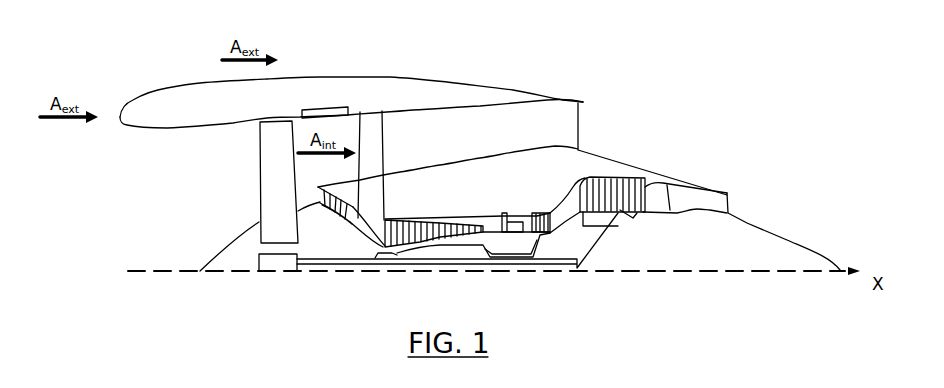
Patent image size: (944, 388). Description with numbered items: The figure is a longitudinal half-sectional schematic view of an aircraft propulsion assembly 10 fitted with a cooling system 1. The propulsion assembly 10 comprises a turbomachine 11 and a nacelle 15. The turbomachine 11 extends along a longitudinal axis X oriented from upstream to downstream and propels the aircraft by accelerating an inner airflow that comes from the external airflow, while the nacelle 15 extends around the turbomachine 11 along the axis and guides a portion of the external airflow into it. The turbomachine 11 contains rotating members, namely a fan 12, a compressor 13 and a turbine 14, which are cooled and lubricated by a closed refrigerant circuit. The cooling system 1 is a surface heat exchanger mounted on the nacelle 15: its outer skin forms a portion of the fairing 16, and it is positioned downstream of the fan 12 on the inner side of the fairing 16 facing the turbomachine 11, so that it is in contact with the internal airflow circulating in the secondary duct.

The cooling system 1 is at (326, 107).
The propulsion assembly 10 is at (139, 71).
The turbomachine 11 is at (641, 148).
The fan 12 is at (275, 273).
The compressor 13 is at (410, 247).
The turbine 14 is at (608, 207).
The nacelle 15 is at (526, 77).
The fairing 16 is at (395, 78).